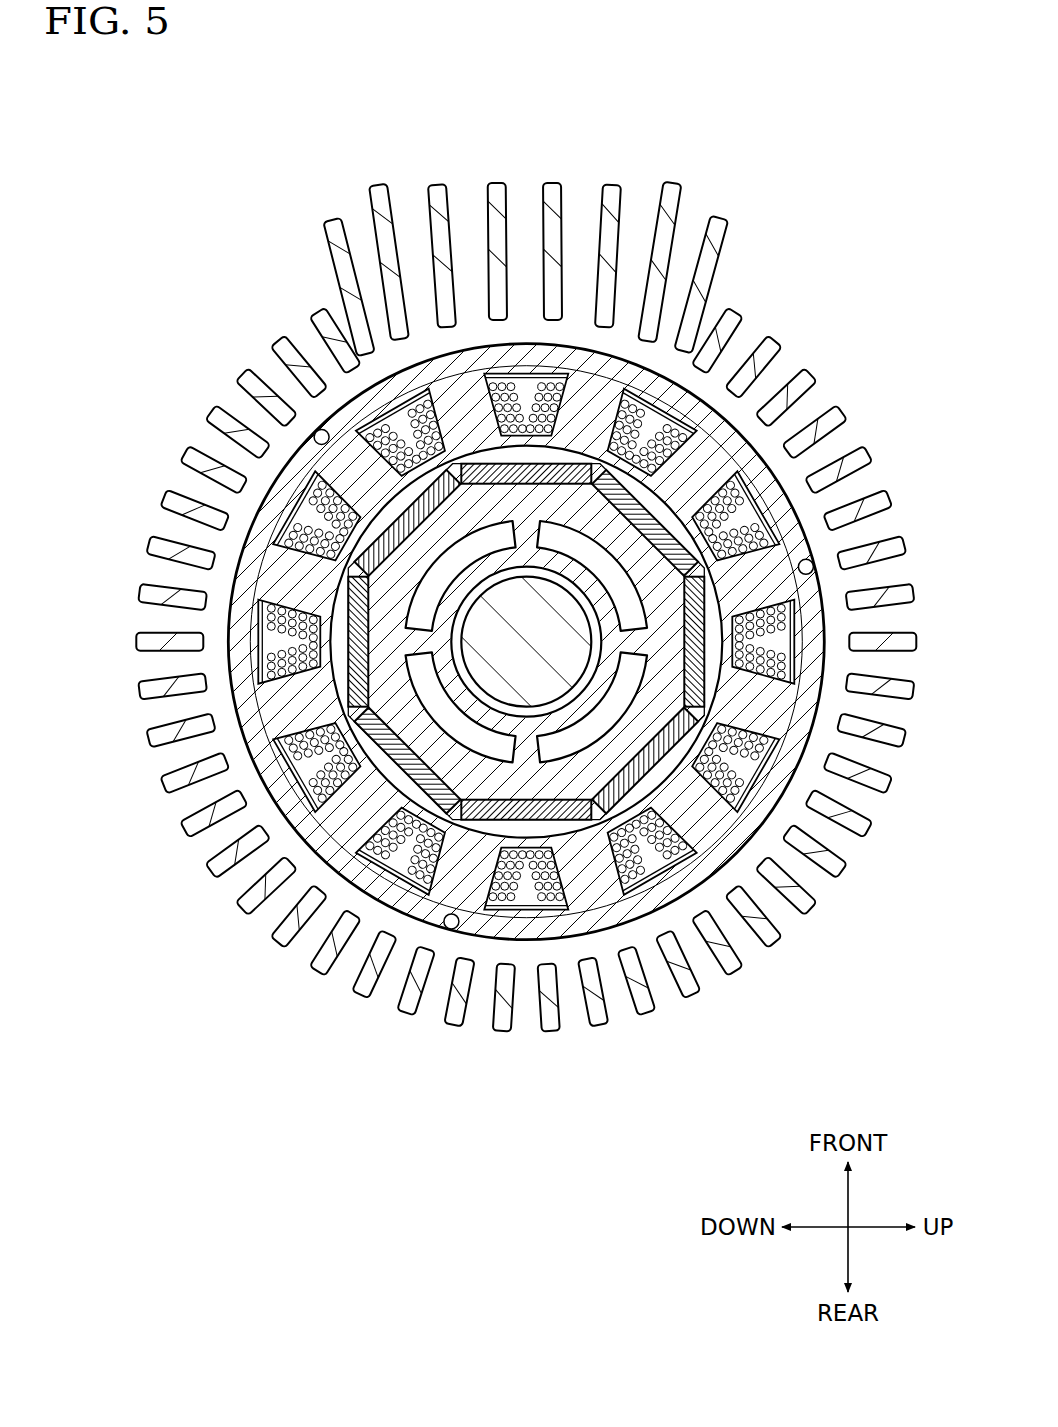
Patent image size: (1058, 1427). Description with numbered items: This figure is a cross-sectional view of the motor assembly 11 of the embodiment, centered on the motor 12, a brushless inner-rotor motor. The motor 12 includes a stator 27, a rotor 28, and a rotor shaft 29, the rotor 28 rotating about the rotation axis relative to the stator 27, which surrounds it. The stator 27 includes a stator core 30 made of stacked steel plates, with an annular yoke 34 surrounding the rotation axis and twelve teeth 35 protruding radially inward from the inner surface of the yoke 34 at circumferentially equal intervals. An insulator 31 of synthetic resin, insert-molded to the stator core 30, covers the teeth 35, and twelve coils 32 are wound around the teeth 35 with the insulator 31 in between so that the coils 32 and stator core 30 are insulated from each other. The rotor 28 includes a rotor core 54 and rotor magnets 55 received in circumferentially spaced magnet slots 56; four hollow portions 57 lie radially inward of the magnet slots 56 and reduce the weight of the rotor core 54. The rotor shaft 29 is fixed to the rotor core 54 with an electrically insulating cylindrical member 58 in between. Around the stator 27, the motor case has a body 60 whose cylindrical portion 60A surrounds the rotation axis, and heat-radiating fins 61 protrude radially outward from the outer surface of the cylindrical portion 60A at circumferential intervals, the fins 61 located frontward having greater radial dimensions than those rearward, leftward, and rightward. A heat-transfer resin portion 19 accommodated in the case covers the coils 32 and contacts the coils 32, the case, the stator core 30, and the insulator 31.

The electric motor 11 is at (764, 211).
The motor 12 is at (250, 513).
The heat-transfer resin portion 19 is at (735, 768).
The stator 27 is at (233, 551).
The rotor 28 is at (328, 596).
The rotor shaft 29 is at (468, 780).
The stator core 30 is at (435, 845).
The insulator 31 is at (458, 405).
The coils 32 is at (522, 420).
The yoke 34 is at (392, 345).
The teeth 35 is at (452, 398).
The rotor core 54 is at (575, 430).
The rotor magnets 55 is at (487, 420).
The magnet slots 56 is at (548, 440).
The hollow portions 57 is at (398, 385).
The cylindrical member 58 is at (480, 742).
The body 60 is at (828, 388).
The cylindrical portion 60A is at (218, 745).
The heat-radiating fins 61 is at (205, 698).